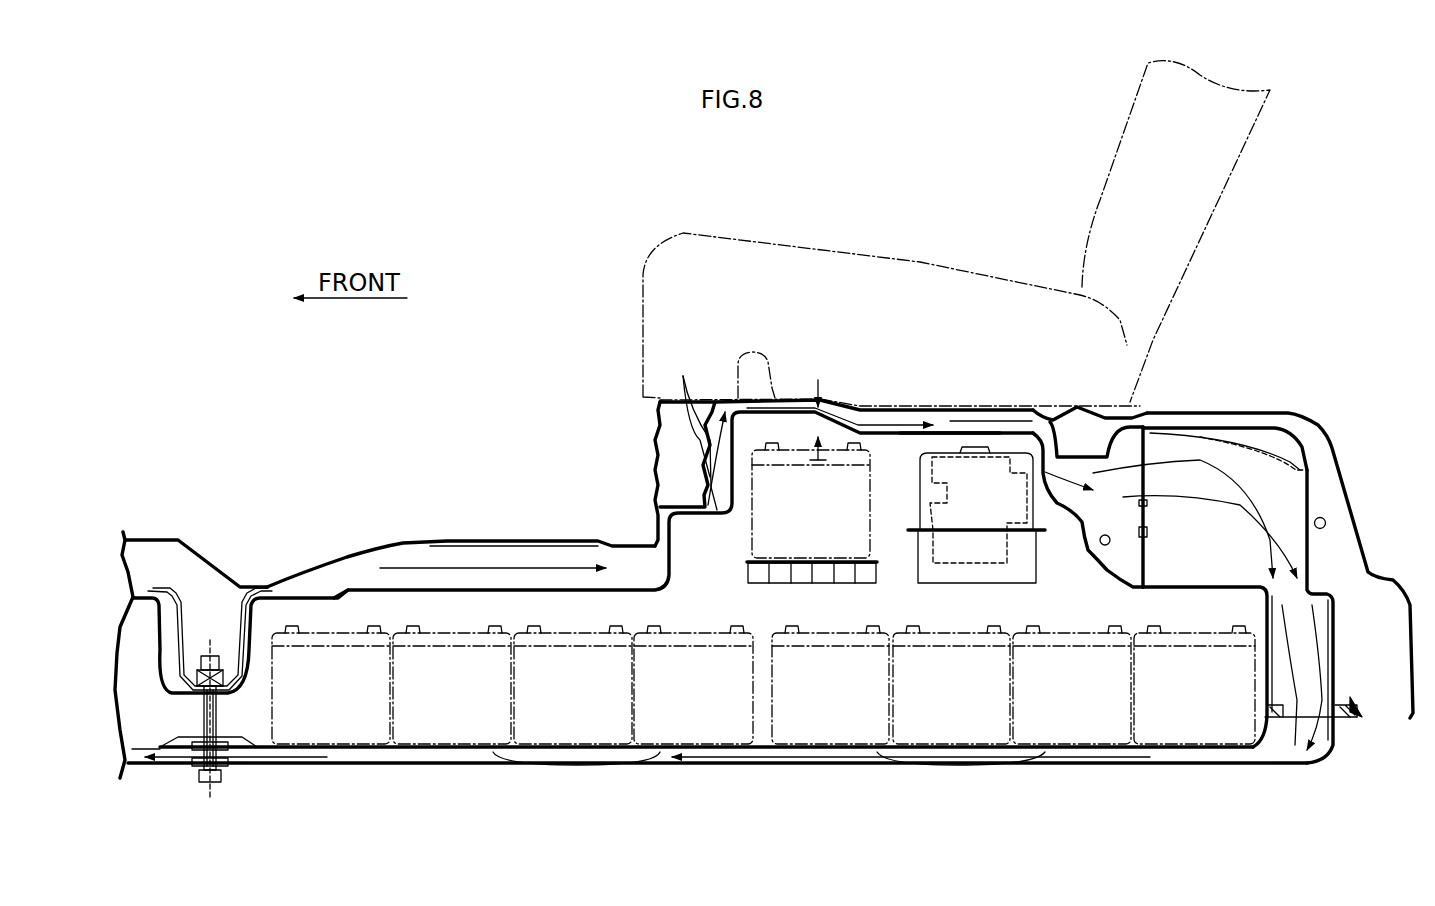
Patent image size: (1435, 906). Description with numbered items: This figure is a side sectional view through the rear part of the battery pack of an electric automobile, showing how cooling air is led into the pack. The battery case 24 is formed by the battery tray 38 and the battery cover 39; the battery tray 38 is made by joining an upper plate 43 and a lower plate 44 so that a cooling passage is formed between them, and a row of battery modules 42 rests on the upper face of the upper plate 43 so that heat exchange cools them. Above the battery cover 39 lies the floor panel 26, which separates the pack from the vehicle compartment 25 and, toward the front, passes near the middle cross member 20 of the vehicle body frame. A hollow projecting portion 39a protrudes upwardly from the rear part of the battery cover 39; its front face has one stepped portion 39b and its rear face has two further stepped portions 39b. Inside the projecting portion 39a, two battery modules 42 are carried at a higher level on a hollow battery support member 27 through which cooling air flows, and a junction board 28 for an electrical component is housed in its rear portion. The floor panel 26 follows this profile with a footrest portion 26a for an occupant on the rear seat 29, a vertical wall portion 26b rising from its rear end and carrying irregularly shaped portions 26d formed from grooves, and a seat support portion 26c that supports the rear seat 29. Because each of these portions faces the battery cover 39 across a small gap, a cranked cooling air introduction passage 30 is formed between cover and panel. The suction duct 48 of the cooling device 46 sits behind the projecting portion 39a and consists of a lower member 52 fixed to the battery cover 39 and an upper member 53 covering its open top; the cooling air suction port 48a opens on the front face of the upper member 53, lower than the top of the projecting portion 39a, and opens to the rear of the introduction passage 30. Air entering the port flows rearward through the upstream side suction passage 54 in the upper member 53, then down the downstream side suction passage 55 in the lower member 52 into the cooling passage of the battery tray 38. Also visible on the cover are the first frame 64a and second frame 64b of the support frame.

The middle cross member 20 is at (207, 595).
The battery case 24 is at (463, 577).
The vehicle compartment 25 is at (531, 371).
The floor panel 26 is at (400, 537).
The footrest portion 26a is at (513, 541).
The vertical wall portion 26b is at (663, 450).
The seat support portion 26c is at (880, 403).
The irregularly shaped portions 26d is at (688, 429).
The battery support member 27 is at (810, 584).
The junction board 28 is at (940, 492).
The rear seat 29 is at (932, 255).
The cooling air introduction passage 30 is at (557, 550).
The battery tray 38 is at (717, 811).
The battery cover 39 is at (343, 584).
The projecting portion 39a is at (950, 428).
The stepped portion 39b is at (688, 510).
The battery module 42 is at (745, 519).
The upper plate 43 is at (350, 748).
The lower plate 44 is at (473, 748).
The cooling device 46 is at (1256, 418).
The suction duct 48 is at (1280, 581).
The cooling air suction port 48a is at (1140, 450).
The lower member 52 is at (1345, 604).
The upper member 53 is at (1290, 445).
The upstream side suction passage 54 is at (1211, 504).
The downstream side suction passage 55 is at (1288, 647).
The first frame 64a is at (1148, 531).
The second frame 64b is at (1324, 530).